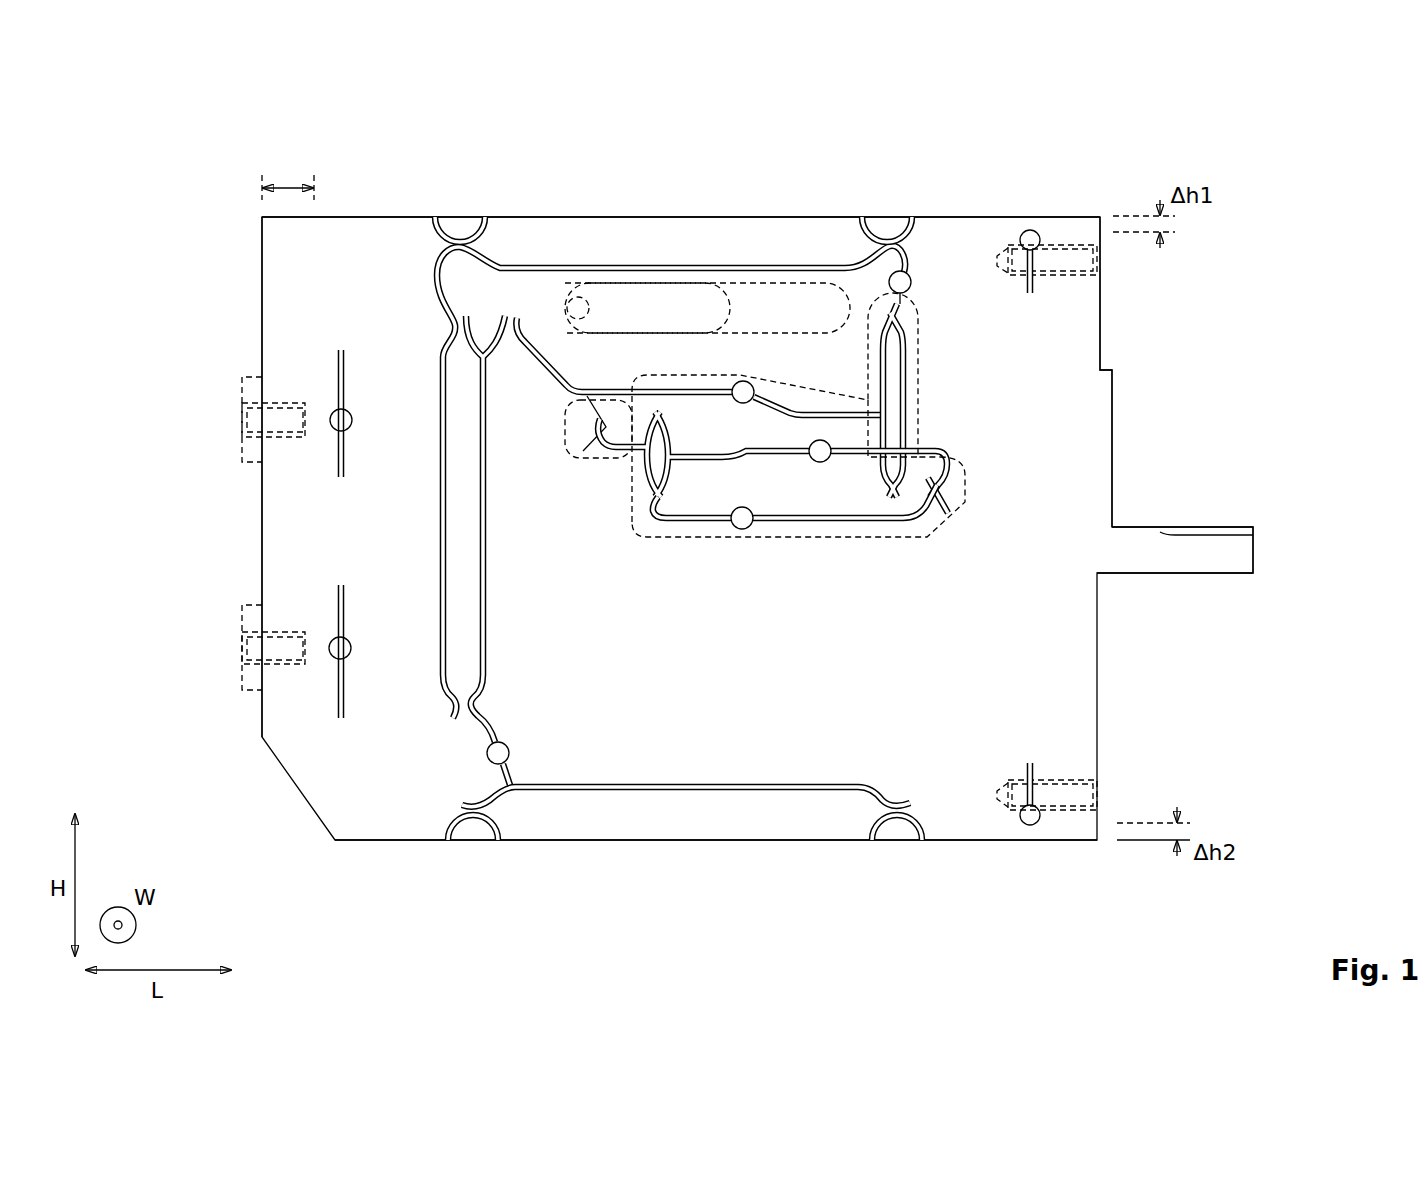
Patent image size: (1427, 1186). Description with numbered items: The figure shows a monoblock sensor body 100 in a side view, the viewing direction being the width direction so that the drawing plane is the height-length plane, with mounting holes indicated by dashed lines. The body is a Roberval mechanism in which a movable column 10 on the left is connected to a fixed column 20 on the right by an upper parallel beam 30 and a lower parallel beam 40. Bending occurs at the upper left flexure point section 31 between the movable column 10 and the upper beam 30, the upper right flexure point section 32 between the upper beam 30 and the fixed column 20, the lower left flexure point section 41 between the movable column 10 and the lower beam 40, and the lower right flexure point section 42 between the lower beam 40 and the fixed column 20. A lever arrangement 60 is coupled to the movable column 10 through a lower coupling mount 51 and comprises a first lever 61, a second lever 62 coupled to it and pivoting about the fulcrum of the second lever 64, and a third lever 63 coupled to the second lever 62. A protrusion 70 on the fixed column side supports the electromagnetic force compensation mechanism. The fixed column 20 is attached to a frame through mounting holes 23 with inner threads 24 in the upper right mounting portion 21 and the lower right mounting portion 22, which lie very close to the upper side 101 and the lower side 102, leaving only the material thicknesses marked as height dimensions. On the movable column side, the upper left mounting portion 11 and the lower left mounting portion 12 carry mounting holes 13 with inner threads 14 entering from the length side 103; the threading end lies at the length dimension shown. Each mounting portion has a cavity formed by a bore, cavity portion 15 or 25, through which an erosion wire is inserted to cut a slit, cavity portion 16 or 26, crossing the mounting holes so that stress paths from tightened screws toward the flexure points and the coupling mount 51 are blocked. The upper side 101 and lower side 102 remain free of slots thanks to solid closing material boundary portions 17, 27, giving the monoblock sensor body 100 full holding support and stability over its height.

The monoblock sensor body 100 is at (1308, 150).
The movable column 10 is at (377, 525).
The upper side 101 is at (970, 215).
The lower side 102 is at (917, 843).
The length side of movable column 103 is at (262, 538).
The upper left mounting portion 11 is at (221, 565).
The lower left mounting portion 12 is at (236, 652).
The mounting hole 13 is at (320, 442).
The inner thread 14 is at (288, 392).
The cavity portion 15 is at (330, 412).
The cavity portion 16 is at (338, 364).
The closing material boundary portion 17 is at (342, 266).
The fixed column 20 is at (995, 565).
The upper right mounting portion 21 is at (1159, 531).
The lower right mounting portion 22 is at (1105, 788).
The mounting hole 23 is at (1010, 245).
The inner thread 24 is at (1060, 277).
The cavity portion 25 is at (1042, 242).
The cavity portion 26 is at (1031, 293).
The closing material boundary portion 27 is at (1033, 229).
The upper parallel beam 30 is at (692, 238).
The upper left flexure point section 31 is at (446, 197).
The upper right flexure point section 32 is at (889, 201).
The lower parallel beam 40 is at (652, 820).
The lower left flexure point section 41 is at (465, 855).
The lower right flexure point section 42 is at (823, 854).
The lower coupling mount 51 is at (492, 702).
The lever arrangement 60 is at (944, 474).
The first lever 61 is at (612, 376).
The second lever 62 is at (802, 504).
The third lever 63 is at (729, 439).
The fulcrum of second lever 64 is at (953, 488).
The protrusion 70 is at (1188, 553).